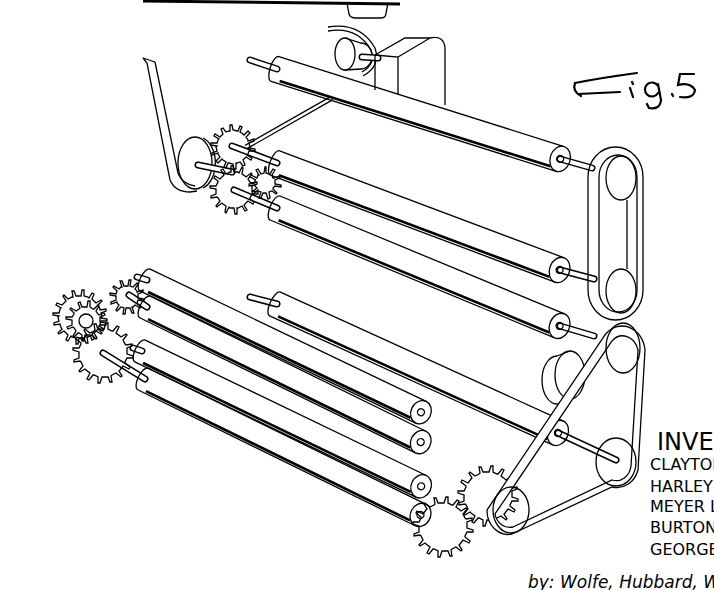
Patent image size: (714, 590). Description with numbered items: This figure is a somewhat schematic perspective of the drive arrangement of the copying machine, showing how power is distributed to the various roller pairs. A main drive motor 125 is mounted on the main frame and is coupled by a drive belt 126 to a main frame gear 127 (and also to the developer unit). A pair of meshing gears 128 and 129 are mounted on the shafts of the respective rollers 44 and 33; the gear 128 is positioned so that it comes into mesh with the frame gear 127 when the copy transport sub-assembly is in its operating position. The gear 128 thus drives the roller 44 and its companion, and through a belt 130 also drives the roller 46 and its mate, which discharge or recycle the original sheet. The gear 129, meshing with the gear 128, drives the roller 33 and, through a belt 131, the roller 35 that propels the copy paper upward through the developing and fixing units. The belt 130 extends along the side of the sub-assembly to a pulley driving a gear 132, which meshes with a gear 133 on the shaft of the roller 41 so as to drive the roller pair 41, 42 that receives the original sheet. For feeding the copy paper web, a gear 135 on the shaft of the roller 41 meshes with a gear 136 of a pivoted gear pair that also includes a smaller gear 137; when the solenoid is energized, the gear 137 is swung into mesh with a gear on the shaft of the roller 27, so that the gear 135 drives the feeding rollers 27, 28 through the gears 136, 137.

The driven roller 27 is at (165, 305).
The driven roller 28 is at (192, 296).
The driven roller 33 is at (367, 190).
The driven roller 35 is at (477, 134).
The driven roller 41 is at (350, 491).
The driven roller 42 is at (327, 446).
The driven roller 44 is at (347, 243).
The driven roller 46 is at (407, 353).
The main drive motor 125 is at (447, 82).
The drive belt 126 is at (162, 96).
The main frame gear 127 is at (278, 160).
The gear 128 is at (220, 208).
The gear 129 is at (236, 128).
The belt 130 is at (639, 393).
The belt 131 is at (637, 240).
The gear 132 is at (488, 470).
The gear 133 is at (414, 553).
The gear 135 is at (95, 385).
The gear 136 is at (70, 347).
The smaller gear 137 is at (88, 300).